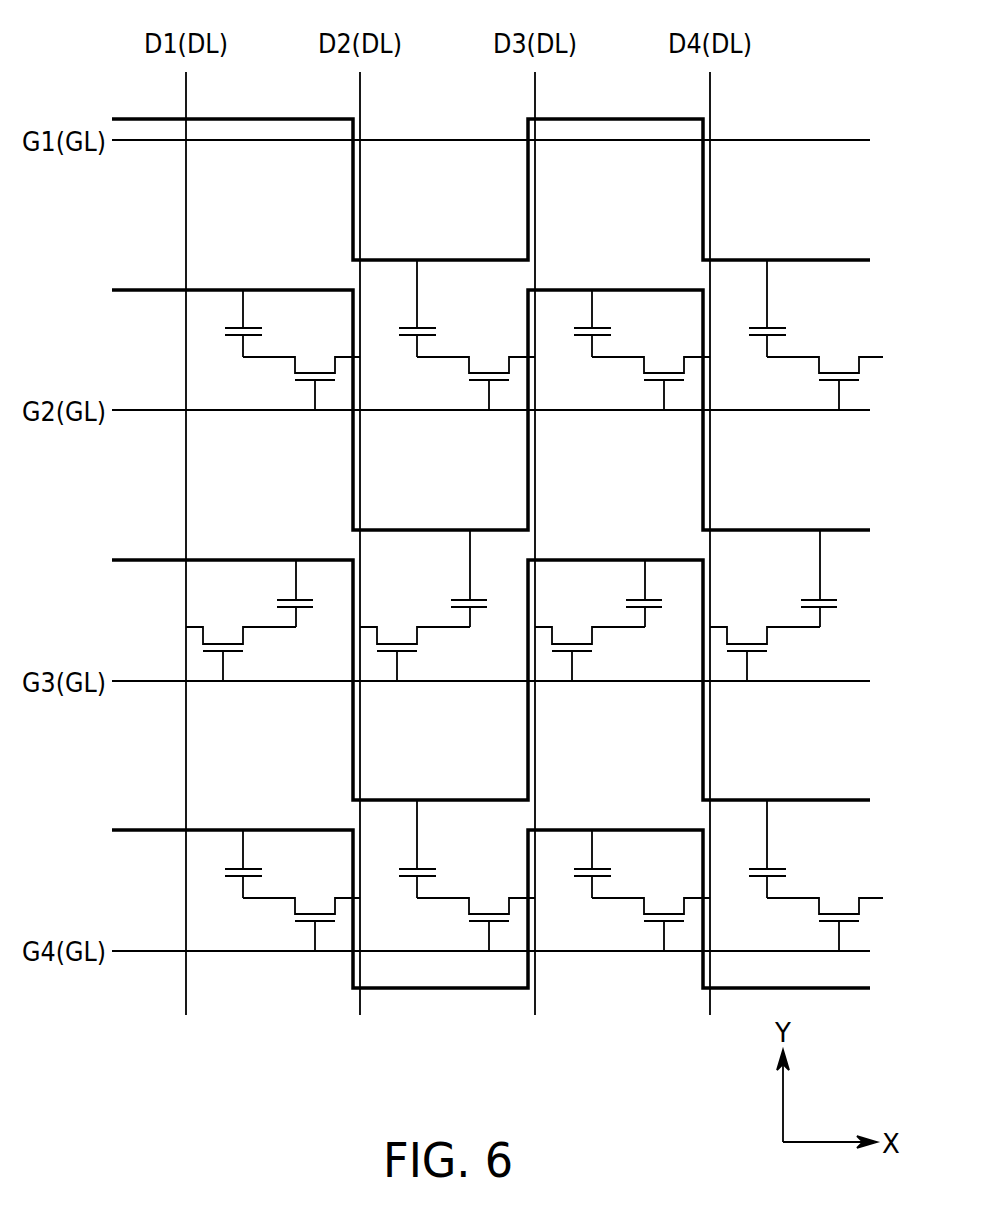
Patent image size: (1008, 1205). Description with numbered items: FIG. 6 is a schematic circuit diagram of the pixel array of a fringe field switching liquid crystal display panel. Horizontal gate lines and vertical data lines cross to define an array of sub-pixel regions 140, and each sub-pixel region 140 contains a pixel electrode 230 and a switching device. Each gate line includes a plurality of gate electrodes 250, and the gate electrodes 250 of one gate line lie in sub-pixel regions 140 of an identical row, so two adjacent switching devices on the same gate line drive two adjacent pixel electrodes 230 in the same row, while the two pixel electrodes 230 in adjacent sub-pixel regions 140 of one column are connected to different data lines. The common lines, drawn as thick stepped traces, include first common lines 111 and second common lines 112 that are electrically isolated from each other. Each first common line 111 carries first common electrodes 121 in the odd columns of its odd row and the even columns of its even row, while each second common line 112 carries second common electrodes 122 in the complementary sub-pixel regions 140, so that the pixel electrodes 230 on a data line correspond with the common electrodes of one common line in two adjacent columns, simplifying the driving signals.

The first common line 111 is at (130, 289).
The second common line 112 is at (130, 118).
The first common electrode 121 is at (252, 327).
The second common electrode 122 is at (426, 327).
The sub-pixel region 140 is at (250, 199).
The pixel electrode 230 is at (240, 340).
The gate electrode 250 is at (303, 382).